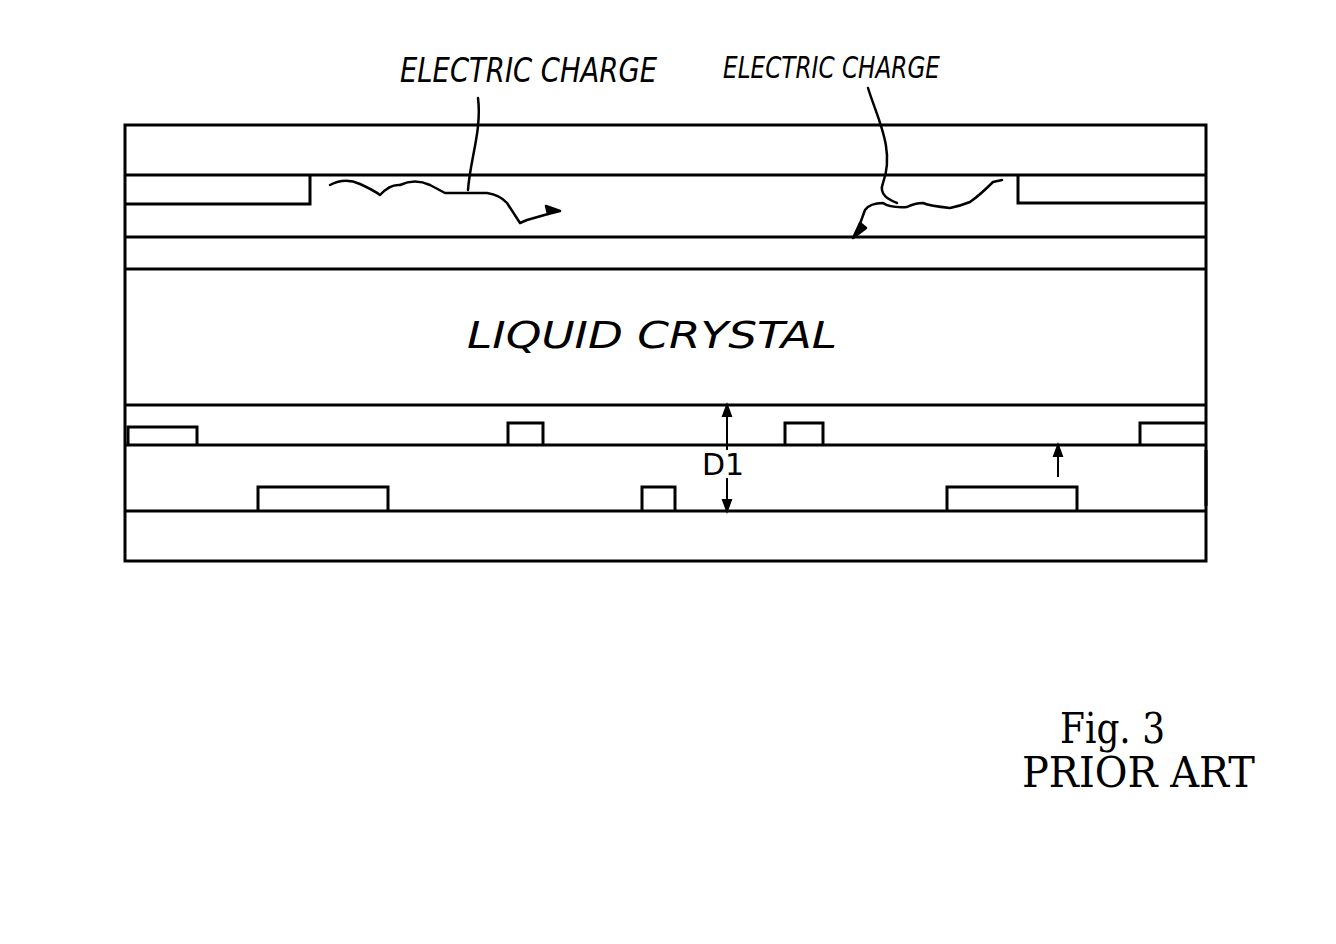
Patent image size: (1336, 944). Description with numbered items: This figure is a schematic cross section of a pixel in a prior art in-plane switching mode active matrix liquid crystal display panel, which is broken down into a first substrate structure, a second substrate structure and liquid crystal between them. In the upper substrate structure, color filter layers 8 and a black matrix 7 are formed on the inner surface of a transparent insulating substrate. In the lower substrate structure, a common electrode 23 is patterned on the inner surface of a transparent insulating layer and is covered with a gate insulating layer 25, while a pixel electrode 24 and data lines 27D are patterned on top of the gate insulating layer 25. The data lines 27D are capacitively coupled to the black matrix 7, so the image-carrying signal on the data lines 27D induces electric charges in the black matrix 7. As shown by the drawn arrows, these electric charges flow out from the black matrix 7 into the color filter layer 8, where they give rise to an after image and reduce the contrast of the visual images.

The black matrix 7 is at (192, 183).
The color filter layer 8 is at (982, 183).
The data line 27D is at (165, 447).
The gate insulating layer 25 is at (1207, 482).
The common electrode 23 is at (328, 507).
The pixel electrode 24 is at (527, 435).